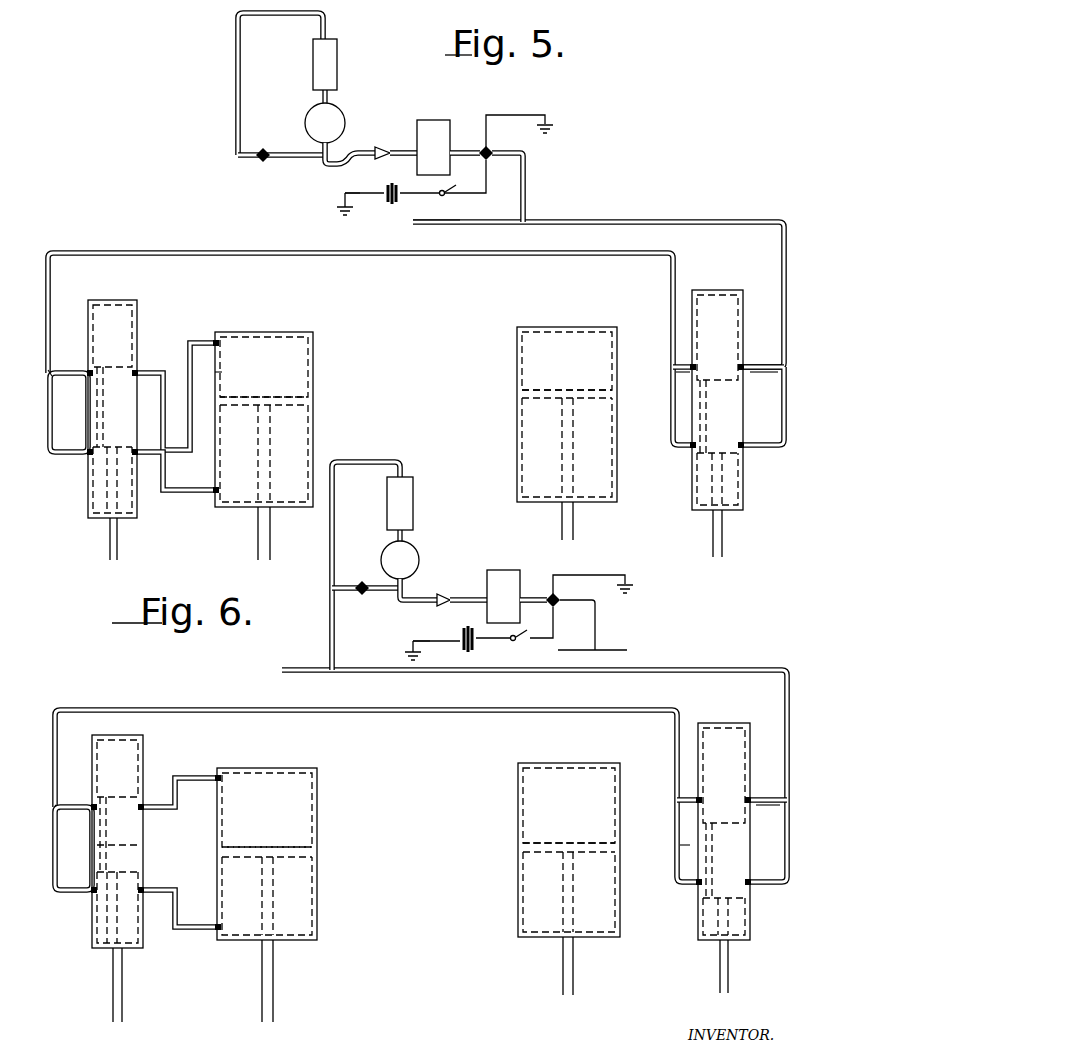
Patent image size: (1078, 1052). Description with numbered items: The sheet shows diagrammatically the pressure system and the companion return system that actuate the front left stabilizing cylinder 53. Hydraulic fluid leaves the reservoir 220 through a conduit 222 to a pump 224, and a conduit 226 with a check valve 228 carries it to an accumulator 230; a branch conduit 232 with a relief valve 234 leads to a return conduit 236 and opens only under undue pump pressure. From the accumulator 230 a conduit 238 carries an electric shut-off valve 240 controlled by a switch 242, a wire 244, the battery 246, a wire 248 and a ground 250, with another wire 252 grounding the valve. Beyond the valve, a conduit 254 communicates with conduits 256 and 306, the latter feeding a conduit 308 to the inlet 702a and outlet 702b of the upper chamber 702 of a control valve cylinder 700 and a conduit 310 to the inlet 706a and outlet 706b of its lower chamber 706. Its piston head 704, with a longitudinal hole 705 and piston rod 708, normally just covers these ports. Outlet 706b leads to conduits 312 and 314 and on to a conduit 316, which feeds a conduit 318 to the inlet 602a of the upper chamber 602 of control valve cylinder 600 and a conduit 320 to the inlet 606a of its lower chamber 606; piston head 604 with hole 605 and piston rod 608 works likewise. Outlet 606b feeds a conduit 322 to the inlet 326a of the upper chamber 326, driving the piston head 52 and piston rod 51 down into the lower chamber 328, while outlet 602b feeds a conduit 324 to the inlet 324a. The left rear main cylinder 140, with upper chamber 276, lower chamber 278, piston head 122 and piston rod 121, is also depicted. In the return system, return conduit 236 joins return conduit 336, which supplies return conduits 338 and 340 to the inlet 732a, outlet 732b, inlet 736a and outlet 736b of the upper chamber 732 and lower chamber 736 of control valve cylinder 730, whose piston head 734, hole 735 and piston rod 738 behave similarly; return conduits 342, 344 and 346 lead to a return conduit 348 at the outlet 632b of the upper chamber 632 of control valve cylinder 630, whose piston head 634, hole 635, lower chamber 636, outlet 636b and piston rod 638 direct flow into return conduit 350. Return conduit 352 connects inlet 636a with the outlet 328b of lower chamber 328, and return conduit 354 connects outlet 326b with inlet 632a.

In FIG. 5, the piston rod 51 is at (271, 527).
In FIG. 6, the piston rod 51 is at (274, 973).
In FIG. 5, the piston head 52 is at (312, 398).
In FIG. 6, the piston head 52 is at (313, 848).
In FIG. 5, the front left stabilizing cylinder 53 is at (265, 332).
In FIG. 6, the front left stabilizing cylinder 53 is at (270, 768).
In FIG. 5, the piston rod 121 is at (574, 522).
In FIG. 6, the piston rod 121 is at (574, 958).
In FIG. 5, the piston head 122 is at (526, 397).
In FIG. 6, the piston head 122 is at (525, 851).
In FIG. 5, the left rear main cylinder 140 is at (562, 327).
In FIG. 6, the left rear main cylinder 140 is at (568, 763).
In FIG. 5, the reservoir 220 is at (330, 54).
In FIG. 6, the reservoir 220 is at (404, 489).
In FIG. 5, the conduit 222 is at (329, 98).
In FIG. 6, the conduit 222 is at (406, 537).
In FIG. 5, the pump 224 is at (325, 123).
In FIG. 6, the pump 224 is at (400, 560).
In FIG. 5, the conduit 226 is at (340, 168).
In FIG. 6, the conduit 226 is at (418, 598).
In FIG. 5, the check valve 228 is at (383, 148).
In FIG. 6, the check valve 228 is at (441, 595).
In FIG. 5, the accumulator 230 is at (433, 147).
In FIG. 6, the accumulator 230 is at (500, 570).
In FIG. 5, the conduit 232 is at (296, 162).
In FIG. 6, the conduit 232 is at (372, 594).
In FIG. 5, the relief valve 234 is at (264, 148).
In FIG. 6, the relief valve 234 is at (362, 581).
In FIG. 5, the return conduit 236 is at (288, 22).
In FIG. 6, the return conduit 236 is at (360, 462).
In FIG. 5, the conduit 238 is at (462, 150).
In FIG. 6, the conduit 238 is at (535, 598).
In FIG. 5, the electric shut-off valve 240 is at (489, 146).
In FIG. 6, the electric shut-off valve 240 is at (558, 597).
In FIG. 5, the switch 242 is at (450, 197).
In FIG. 6, the switch 242 is at (514, 641).
In FIG. 5, the wire 244 is at (418, 195).
In FIG. 6, the wire 244 is at (541, 622).
In FIG. 5, the battery 246 is at (389, 206).
In FIG. 6, the battery 246 is at (460, 633).
In FIG. 5, the wire 248 is at (365, 186).
In FIG. 6, the wire 248 is at (417, 644).
In FIG. 5, the ground 250 is at (551, 134).
In FIG. 6, the ground 250 is at (634, 588).
In FIG. 5, the wire 252 is at (506, 116).
In FIG. 6, the wire 252 is at (578, 574).
In FIG. 5, the conduit 254 is at (525, 182).
In FIG. 6, the conduit 254 is at (597, 625).
In FIG. 5, the conduit 256 is at (478, 227).
In FIG. 5, the upper chamber 276 is at (535, 367).
In FIG. 6, the upper chamber 276 is at (540, 798).
In FIG. 5, the lower chamber 278 is at (530, 437).
In FIG. 6, the lower chamber 278 is at (538, 910).
In FIG. 5, the conduit 306 is at (622, 221).
In FIG. 5, the conduit 308 is at (770, 367).
In FIG. 5, the conduit 310 is at (786, 390).
In FIG. 5, the conduit 312 is at (675, 411).
In FIG. 5, the conduit 314 is at (680, 380).
In FIG. 5, the conduit 316 is at (48, 312).
In FIG. 5, the conduit 318 is at (52, 370).
In FIG. 5, the conduit 320 is at (53, 388).
In FIG. 5, the conduit 322 is at (138, 448).
In FIG. 5, the conduit 324 is at (172, 365).
In FIG. 5, the inlet 324a is at (212, 496).
In FIG. 5, the upper chamber 326 is at (290, 362).
In FIG. 6, the upper chamber 326 is at (295, 791).
In FIG. 5, the inlet 326a is at (215, 340).
In FIG. 6, the outlet 326b is at (216, 775).
In FIG. 5, the lower chamber 328 is at (295, 432).
In FIG. 6, the lower chamber 328 is at (295, 897).
In FIG. 6, the outlet 328b is at (216, 933).
In FIG. 6, the return conduit 336 is at (360, 672).
In FIG. 6, the return conduit 338 is at (772, 800).
In FIG. 6, the return conduit 340 is at (788, 823).
In FIG. 6, the return conduit 342 is at (678, 852).
In FIG. 6, the return conduit 344 is at (685, 820).
In FIG. 6, the return conduit 346 is at (314, 708).
In FIG. 6, the return conduit 348 is at (58, 803).
In FIG. 6, the return conduit 350 is at (55, 840).
In FIG. 6, the return conduit 352 is at (168, 888).
In FIG. 6, the return conduit 354 is at (182, 784).
In FIG. 5, the control valve cylinder 600 is at (112, 300).
In FIG. 5, the upper chamber 602 is at (118, 320).
In FIG. 5, the inlet 602a is at (90, 371).
In FIG. 5, the outlet 602b is at (137, 370).
In FIG. 5, the piston head 604 is at (100, 400).
In FIG. 5, the longitudinal hole 605 is at (97, 430).
In FIG. 5, the lower chamber 606 is at (90, 508).
In FIG. 5, the inlet 606a is at (88, 478).
In FIG. 5, the outlet 606b is at (138, 456).
In FIG. 5, the piston rod 608 is at (110, 544).
In FIG. 6, the control valve cylinder 630 is at (126, 735).
In FIG. 6, the upper chamber 632 is at (120, 746).
In FIG. 6, the inlet 632a is at (143, 804).
In FIG. 6, the outlet 632b is at (92, 804).
In FIG. 6, the piston head 634 is at (120, 826).
In FIG. 6, the longitudinal hole 635 is at (106, 846).
In FIG. 6, the lower chamber 636 is at (97, 937).
In FIG. 6, the inlet 636a is at (143, 894).
In FIG. 6, the outlet 636b is at (92, 896).
In FIG. 6, the piston rod 638 is at (113, 983).
In FIG. 5, the control valve cylinder 700 is at (704, 290).
In FIG. 5, the upper chamber 702 is at (722, 313).
In FIG. 5, the inlet 702a is at (742, 364).
In FIG. 5, the outlet 702b is at (694, 364).
In FIG. 5, the piston head 704 is at (718, 385).
In FIG. 5, the longitudinal hole 705 is at (703, 432).
In FIG. 5, the lower chamber 706 is at (730, 487).
In FIG. 5, the inlet 706a is at (743, 443).
In FIG. 5, the outlet 706b is at (692, 452).
In FIG. 5, the piston rod 708 is at (722, 535).
In FIG. 6, the control valve cylinder 730 is at (718, 723).
In FIG. 6, the upper chamber 732 is at (724, 745).
In FIG. 6, the inlet 732a is at (700, 797).
In FIG. 6, the outlet 732b is at (750, 797).
In FIG. 6, the piston head 734 is at (732, 845).
In FIG. 6, the longitudinal hole 735 is at (712, 848).
In FIG. 6, the lower chamber 736 is at (735, 925).
In FIG. 6, the inlet 736a is at (698, 888).
In FIG. 6, the outlet 736b is at (752, 889).
In FIG. 6, the piston rod 738 is at (720, 967).